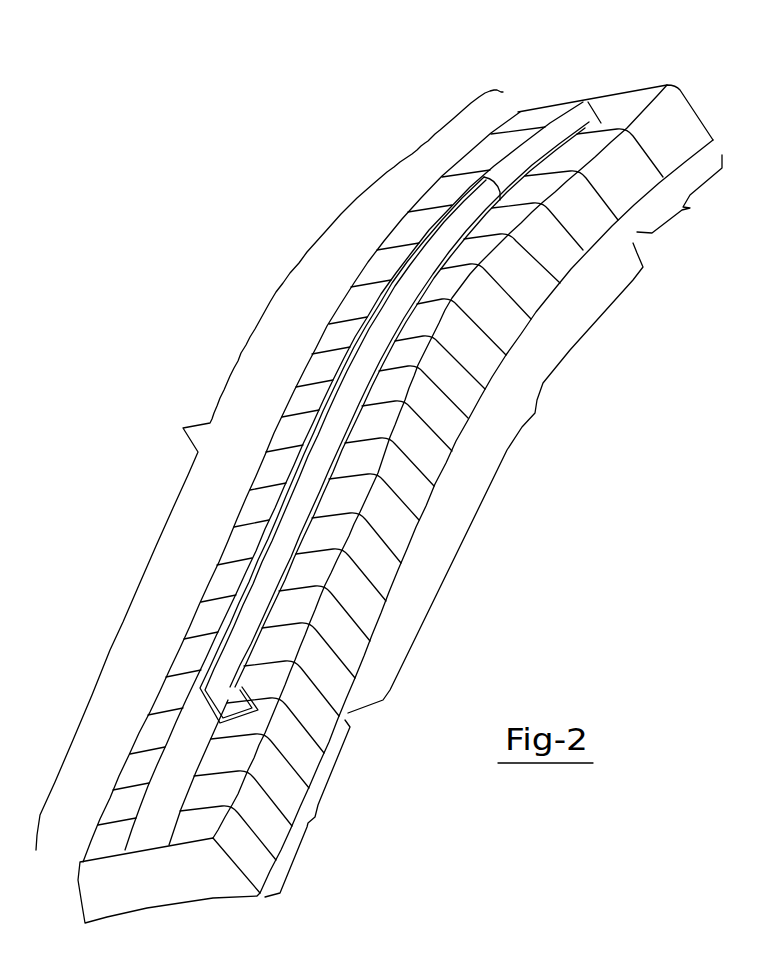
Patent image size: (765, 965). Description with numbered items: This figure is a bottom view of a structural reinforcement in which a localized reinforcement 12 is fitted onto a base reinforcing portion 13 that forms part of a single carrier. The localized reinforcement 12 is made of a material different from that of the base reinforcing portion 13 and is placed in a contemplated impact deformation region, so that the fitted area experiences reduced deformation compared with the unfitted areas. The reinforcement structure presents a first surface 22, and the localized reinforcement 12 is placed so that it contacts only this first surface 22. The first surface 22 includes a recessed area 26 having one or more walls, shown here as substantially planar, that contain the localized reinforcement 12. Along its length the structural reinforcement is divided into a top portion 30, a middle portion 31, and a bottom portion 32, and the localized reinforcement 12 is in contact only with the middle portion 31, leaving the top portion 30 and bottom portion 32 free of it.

The localized reinforcement 12 is at (233, 707).
The base reinforcing portion 13 is at (269, 470).
The first surface 22 is at (446, 489).
The recessed area 26 is at (572, 130).
The top portion 30 is at (679, 194).
The middle portion 31 is at (495, 478).
The bottom portion 32 is at (307, 808).